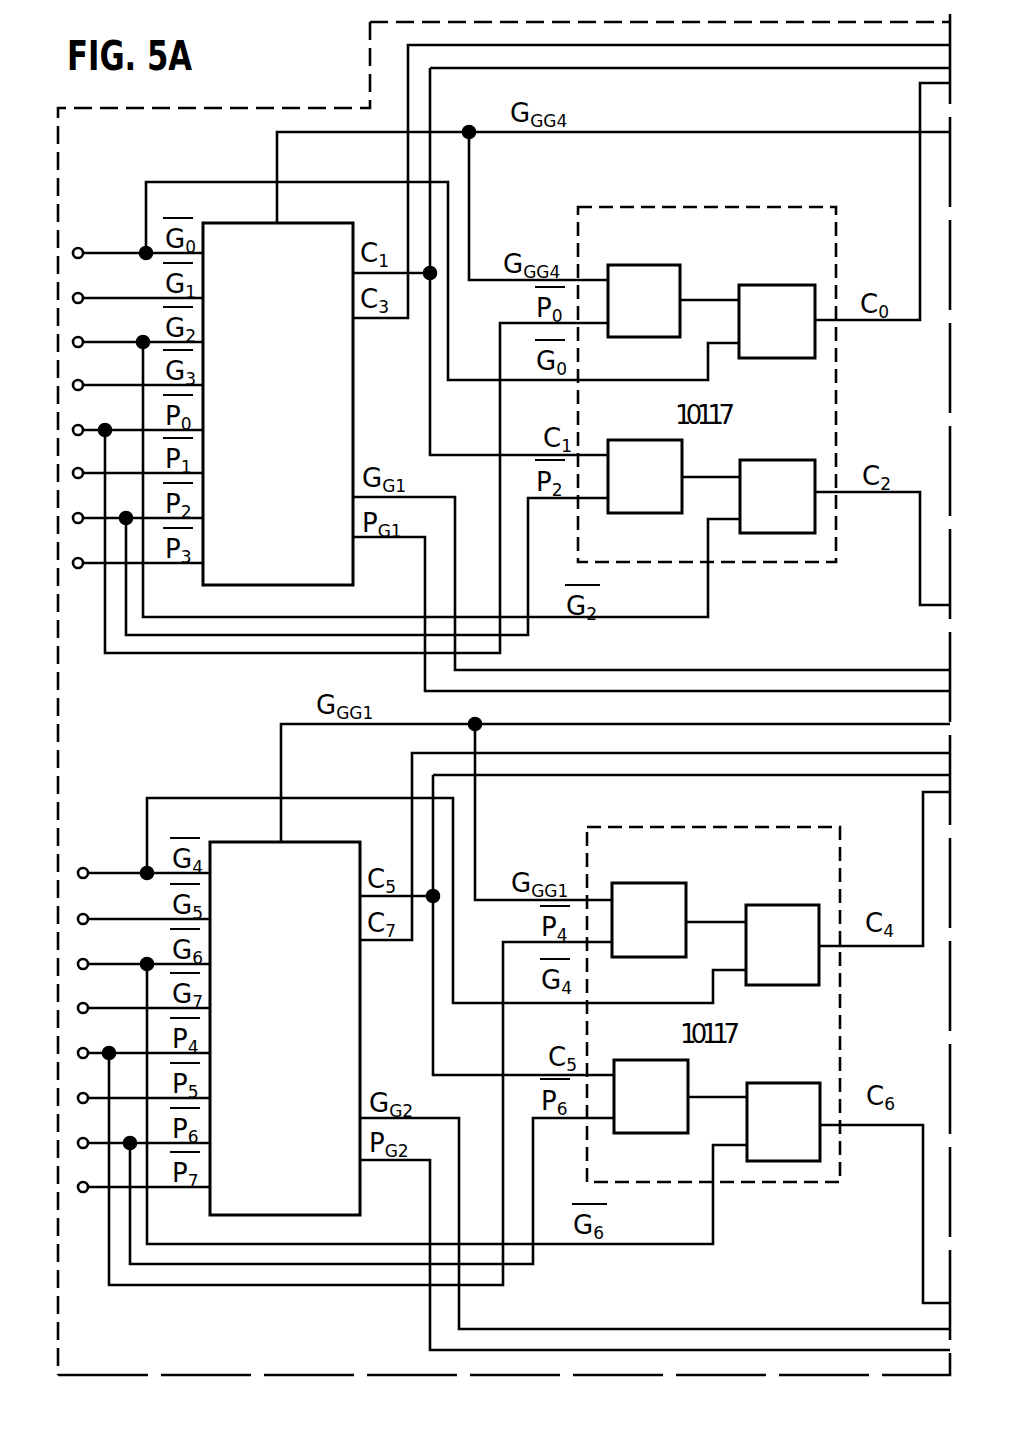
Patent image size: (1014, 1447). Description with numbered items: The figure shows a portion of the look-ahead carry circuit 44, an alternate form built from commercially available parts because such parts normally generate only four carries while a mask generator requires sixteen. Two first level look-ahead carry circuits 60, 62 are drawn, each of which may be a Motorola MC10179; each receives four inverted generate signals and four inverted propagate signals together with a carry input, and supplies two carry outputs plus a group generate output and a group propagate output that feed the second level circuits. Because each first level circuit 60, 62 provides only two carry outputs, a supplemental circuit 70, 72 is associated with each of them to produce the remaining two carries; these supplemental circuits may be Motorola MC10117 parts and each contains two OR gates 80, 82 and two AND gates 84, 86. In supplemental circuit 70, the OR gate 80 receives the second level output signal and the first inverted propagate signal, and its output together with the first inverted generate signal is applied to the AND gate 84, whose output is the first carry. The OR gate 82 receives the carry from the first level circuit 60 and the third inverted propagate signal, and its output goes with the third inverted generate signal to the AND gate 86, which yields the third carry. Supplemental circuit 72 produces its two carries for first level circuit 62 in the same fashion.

The look-ahead carry circuit 44 is at (368, 64).
The first level look-ahead carry circuit 60 is at (240, 223).
The first level look-ahead carry circuit 62 is at (246, 842).
The supplemental circuit 70 is at (626, 208).
The supplemental circuit 72 is at (616, 828).
The OR gate 80 is at (618, 265).
The OR gate 82 is at (644, 440).
The AND gate 84 is at (744, 285).
The AND gate 86 is at (768, 460).